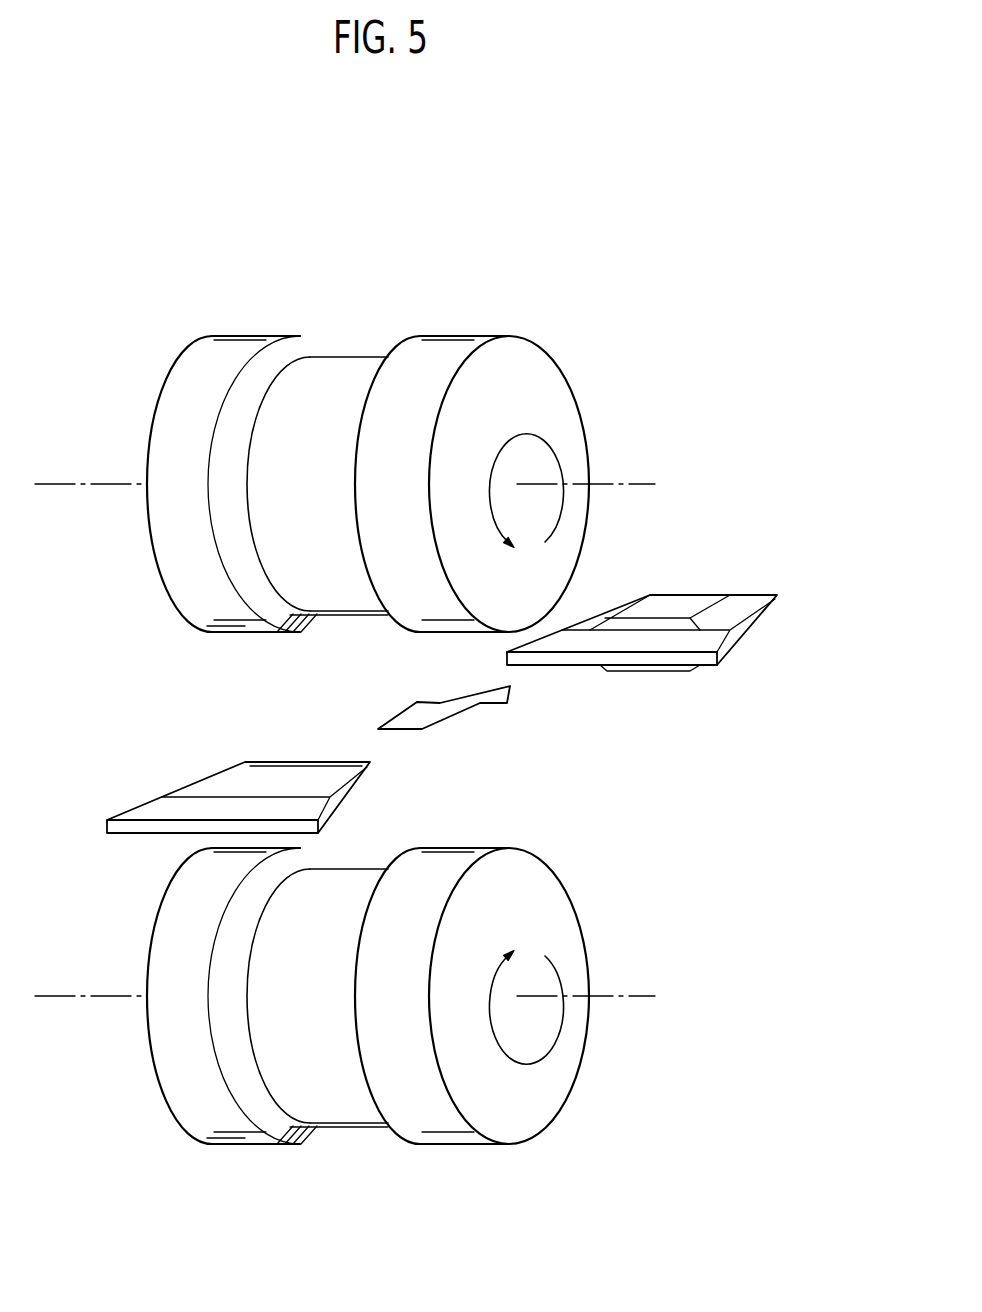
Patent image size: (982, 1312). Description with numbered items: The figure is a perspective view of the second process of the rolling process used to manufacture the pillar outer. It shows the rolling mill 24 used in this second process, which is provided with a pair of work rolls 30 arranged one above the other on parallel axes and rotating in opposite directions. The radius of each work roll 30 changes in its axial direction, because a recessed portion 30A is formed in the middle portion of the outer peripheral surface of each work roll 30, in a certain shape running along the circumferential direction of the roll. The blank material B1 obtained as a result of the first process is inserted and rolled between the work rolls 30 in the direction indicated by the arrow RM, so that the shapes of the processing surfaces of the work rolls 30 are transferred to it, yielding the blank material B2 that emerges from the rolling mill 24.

The rolling mill 24 is at (630, 307).
The work rolls 30 is at (376, 740).
The recessed portion 30A is at (367, 613).
The blank material B1 is at (203, 785).
The blank material B2 is at (698, 600).
The arrow RM is at (452, 718).